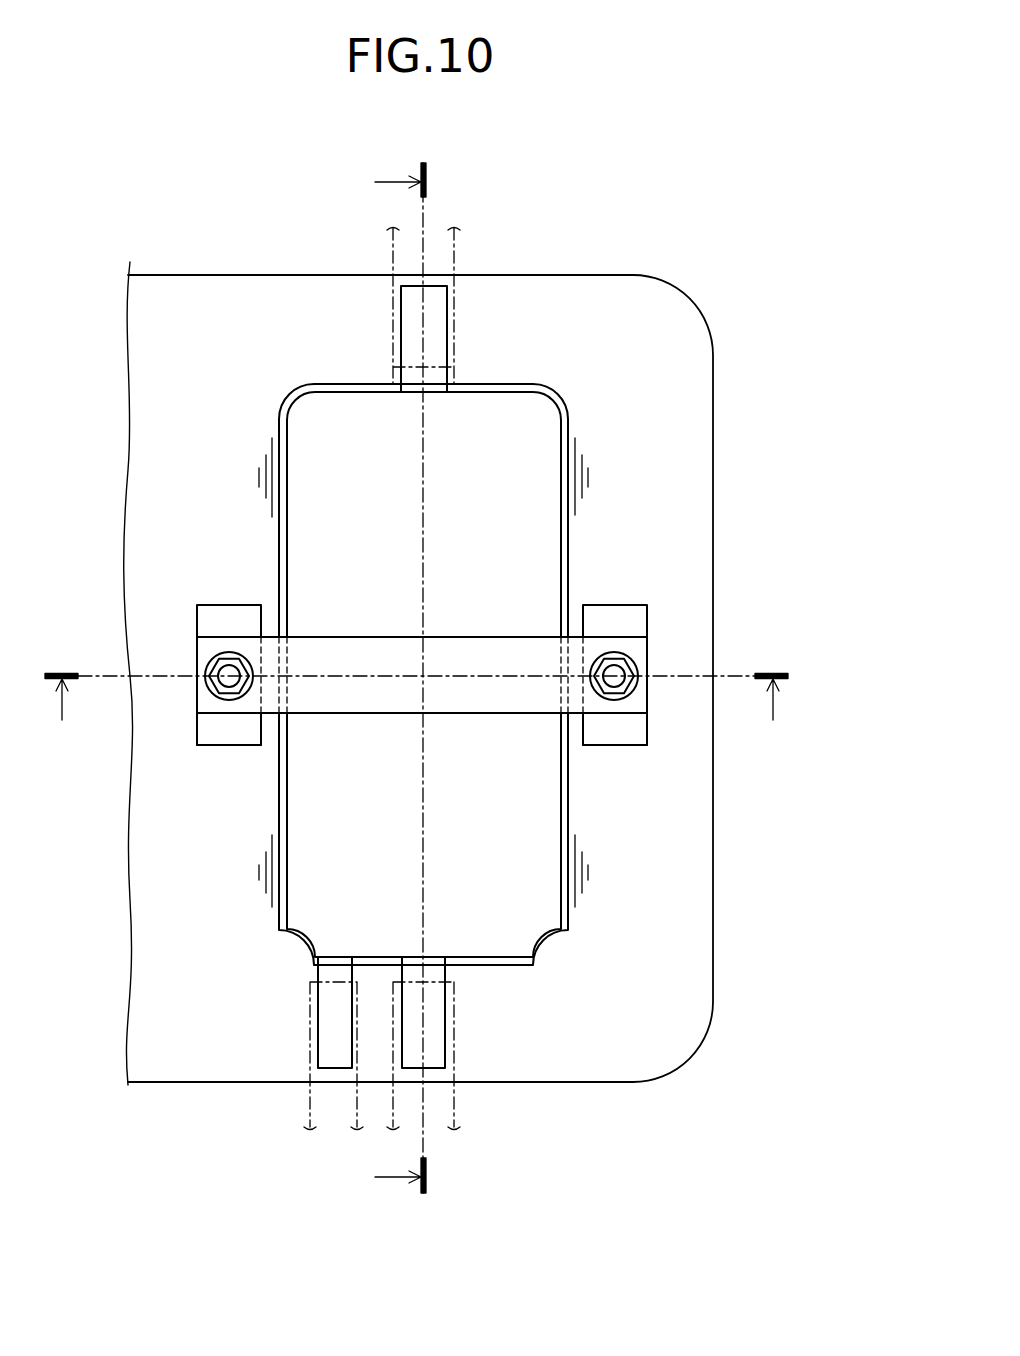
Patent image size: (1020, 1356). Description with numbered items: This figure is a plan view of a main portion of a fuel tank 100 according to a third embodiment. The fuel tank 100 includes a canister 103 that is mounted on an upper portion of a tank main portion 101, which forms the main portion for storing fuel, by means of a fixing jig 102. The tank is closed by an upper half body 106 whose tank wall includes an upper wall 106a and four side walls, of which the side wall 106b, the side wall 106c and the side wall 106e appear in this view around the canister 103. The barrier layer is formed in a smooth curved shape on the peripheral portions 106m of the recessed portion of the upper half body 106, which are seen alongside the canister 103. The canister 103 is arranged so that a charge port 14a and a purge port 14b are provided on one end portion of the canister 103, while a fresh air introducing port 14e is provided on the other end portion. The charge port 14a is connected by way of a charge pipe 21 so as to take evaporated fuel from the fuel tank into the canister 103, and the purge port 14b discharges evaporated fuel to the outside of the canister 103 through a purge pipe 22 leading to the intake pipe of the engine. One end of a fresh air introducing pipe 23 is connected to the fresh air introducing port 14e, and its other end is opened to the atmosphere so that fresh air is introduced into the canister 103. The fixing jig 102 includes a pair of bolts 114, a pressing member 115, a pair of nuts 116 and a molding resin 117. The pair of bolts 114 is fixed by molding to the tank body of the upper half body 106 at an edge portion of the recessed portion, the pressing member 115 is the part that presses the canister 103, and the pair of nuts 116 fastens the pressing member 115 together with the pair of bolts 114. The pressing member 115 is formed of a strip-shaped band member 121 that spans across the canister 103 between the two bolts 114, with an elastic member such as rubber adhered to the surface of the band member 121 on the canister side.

The fuel tank 100 is at (669, 196).
The tank main portion 101 is at (570, 275).
The fixing jig 102 is at (320, 635).
The canister 103 is at (562, 550).
The upper half body 106 is at (242, 322).
The upper wall 106a is at (290, 292).
The side wall 106b is at (532, 1082).
The side wall 106c is at (163, 273).
The side wall 106e is at (714, 410).
The peripheral portion 106m is at (575, 477).
The bolt 114 is at (225, 672).
The pressing member 115 is at (353, 687).
The nut 116 is at (216, 684).
The molding resin 117 is at (218, 735).
The band member 121 is at (510, 700).
The charge port 14a is at (330, 1068).
The purge port 14b is at (436, 1068).
The fresh air introducing port 14e is at (433, 285).
The charge pipe 21 is at (310, 1110).
The purge pipe 22 is at (455, 1108).
The fresh air introducing pipe 23 is at (455, 255).